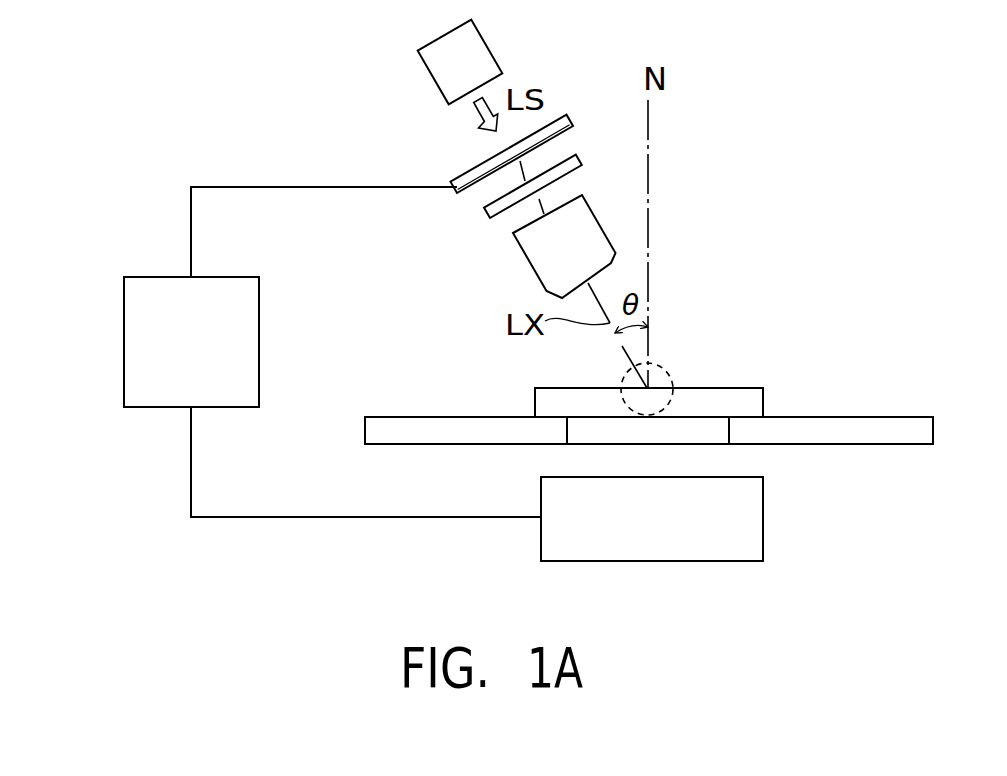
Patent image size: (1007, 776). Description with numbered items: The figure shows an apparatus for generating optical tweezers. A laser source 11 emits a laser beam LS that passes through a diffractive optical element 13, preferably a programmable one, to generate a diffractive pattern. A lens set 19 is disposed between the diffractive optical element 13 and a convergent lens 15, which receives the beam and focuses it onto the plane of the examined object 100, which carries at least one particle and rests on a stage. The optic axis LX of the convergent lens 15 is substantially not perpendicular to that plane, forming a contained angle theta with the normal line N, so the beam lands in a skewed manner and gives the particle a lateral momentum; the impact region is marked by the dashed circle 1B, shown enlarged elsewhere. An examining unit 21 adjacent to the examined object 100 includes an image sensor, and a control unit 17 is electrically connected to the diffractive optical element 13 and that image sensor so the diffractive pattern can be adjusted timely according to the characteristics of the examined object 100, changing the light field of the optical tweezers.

The laser source 11 is at (489, 41).
The diffractive optical element 13 is at (460, 172).
The lens set 19 is at (492, 212).
The convergent lens 15 is at (530, 262).
The control unit 17 is at (175, 396).
The examining unit 21 is at (636, 553).
The examined object 100 is at (763, 403).
The partial enlargement region 1B is at (663, 368).